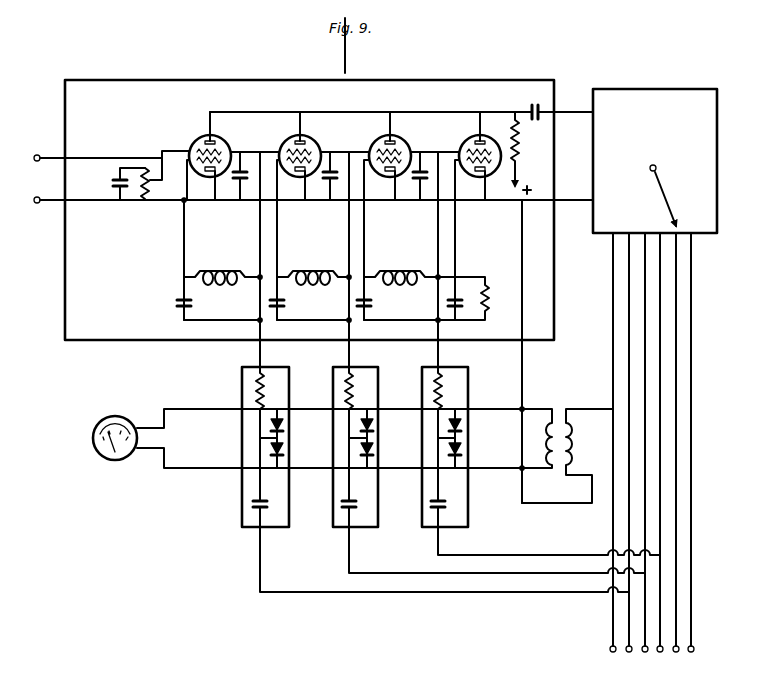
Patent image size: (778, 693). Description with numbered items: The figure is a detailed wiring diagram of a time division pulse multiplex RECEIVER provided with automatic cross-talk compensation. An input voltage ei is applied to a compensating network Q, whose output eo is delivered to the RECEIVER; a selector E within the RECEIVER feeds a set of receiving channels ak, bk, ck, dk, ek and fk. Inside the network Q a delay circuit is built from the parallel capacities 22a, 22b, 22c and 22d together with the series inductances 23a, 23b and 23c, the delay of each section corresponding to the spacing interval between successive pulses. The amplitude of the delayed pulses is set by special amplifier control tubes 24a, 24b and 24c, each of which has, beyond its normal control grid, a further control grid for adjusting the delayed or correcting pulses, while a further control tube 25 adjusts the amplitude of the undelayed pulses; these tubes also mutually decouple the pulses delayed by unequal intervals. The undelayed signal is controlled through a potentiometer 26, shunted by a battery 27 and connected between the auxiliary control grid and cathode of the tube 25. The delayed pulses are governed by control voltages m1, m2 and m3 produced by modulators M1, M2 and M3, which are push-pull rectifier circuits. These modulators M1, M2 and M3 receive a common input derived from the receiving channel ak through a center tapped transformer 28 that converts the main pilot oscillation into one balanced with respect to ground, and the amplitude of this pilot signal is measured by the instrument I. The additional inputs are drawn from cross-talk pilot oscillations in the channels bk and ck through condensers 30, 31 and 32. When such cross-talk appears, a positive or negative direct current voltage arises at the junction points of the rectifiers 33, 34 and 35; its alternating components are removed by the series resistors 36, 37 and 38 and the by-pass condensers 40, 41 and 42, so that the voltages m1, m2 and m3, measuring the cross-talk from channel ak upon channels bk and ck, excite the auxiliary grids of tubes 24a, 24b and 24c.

The compensating network Q is at (188, 80).
The control tube 25 is at (221, 142).
The amplifier control tube 24a is at (313, 142).
The amplifier control tube 24b is at (402, 142).
The amplifier control tube 24c is at (462, 140).
The battery 27 is at (112, 184).
The potentiometer 26 is at (150, 188).
The by-pass condenser 40 is at (238, 184).
The by-pass condenser 41 is at (328, 184).
The by-pass condenser 42 is at (418, 184).
The series inductance 23a is at (232, 268).
The series inductance 23b is at (322, 268).
The series inductance 23c is at (409, 268).
The parallel capacity 22a is at (196, 305).
The parallel capacity 22b is at (288, 305).
The parallel capacity 22c is at (375, 305).
The parallel capacity 22d is at (462, 298).
The control voltage m1 is at (250, 260).
The control voltage m2 is at (340, 260).
The control voltage m3 is at (428, 260).
The modulator M1 is at (270, 538).
The modulator M2 is at (359, 538).
The modulator M3 is at (448, 538).
The series resistor 36 is at (262, 395).
The series resistor 37 is at (351, 395).
The series resistor 38 is at (440, 395).
The rectifier 33 is at (284, 450).
The rectifier 34 is at (374, 450).
The rectifier 35 is at (462, 450).
The condenser 30 is at (264, 505).
The condenser 31 is at (353, 505).
The condenser 32 is at (442, 505).
The center tapped transformer 28 is at (565, 424).
The instrument I is at (111, 415).
The receiver RECEIVER is at (699, 90).
The receiver selector switch E is at (670, 188).
The input voltage ei is at (52, 177).
The output voltage eo is at (585, 160).
The receiving channel ak is at (612, 664).
The receiving channel bk is at (628, 664).
The receiving channel ck is at (644, 664).
The output terminal d dk is at (659, 664).
The output terminal e ek is at (675, 664).
The output terminal f fk is at (689, 664).